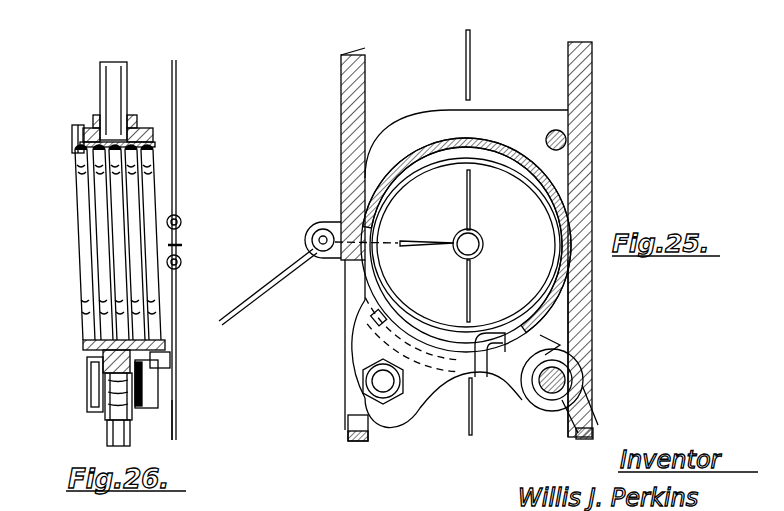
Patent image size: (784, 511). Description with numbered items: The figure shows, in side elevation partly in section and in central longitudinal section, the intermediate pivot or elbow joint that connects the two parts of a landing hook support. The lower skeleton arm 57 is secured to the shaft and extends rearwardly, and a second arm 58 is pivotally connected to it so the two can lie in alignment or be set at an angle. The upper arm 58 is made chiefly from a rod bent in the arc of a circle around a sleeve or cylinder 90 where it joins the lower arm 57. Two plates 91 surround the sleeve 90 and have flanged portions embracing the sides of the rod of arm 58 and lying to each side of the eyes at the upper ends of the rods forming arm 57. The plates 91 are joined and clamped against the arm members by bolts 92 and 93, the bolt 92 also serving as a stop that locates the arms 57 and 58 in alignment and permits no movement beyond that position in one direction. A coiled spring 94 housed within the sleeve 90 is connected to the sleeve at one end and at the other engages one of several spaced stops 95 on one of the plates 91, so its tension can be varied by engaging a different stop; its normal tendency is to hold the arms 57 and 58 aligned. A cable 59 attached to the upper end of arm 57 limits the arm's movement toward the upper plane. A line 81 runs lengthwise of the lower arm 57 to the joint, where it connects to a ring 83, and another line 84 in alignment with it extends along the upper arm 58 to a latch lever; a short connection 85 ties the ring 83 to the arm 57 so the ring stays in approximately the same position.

In FIG. 26, the skeleton arm 57 is at (130, 432).
In FIG. 25, the skeleton arm 57 is at (346, 432).
In FIG. 26, the second arm 58 is at (127, 83).
In FIG. 25, the second arm 58 is at (585, 65).
In FIG. 25, the cable 59 is at (268, 292).
In FIG. 26, the line 81 is at (177, 434).
In FIG. 25, the line 81 is at (468, 415).
In FIG. 26, the ring 83 is at (181, 250).
In FIG. 25, the ring 83 is at (484, 248).
In FIG. 26, the line 84 is at (177, 172).
In FIG. 25, the line 84 is at (470, 190).
In FIG. 26, the short connection 85 is at (181, 228).
In FIG. 25, the short connection 85 is at (430, 245).
In FIG. 26, the sleeve 90 is at (83, 345).
In FIG. 25, the sleeve 90 is at (548, 175).
In FIG. 26, the plates 91 is at (132, 400).
In FIG. 25, the plates 91 is at (594, 300).
In FIG. 25, the bolt 92 is at (566, 135).
In FIG. 26, the bolt 93 is at (158, 385).
In FIG. 25, the bolt 93 is at (385, 392).
In FIG. 26, the coiled spring 94 is at (140, 295).
In FIG. 25, the coiled spring 94 is at (555, 225).
In FIG. 26, the stops 95 is at (170, 360).
In FIG. 25, the stops 95 is at (376, 322).